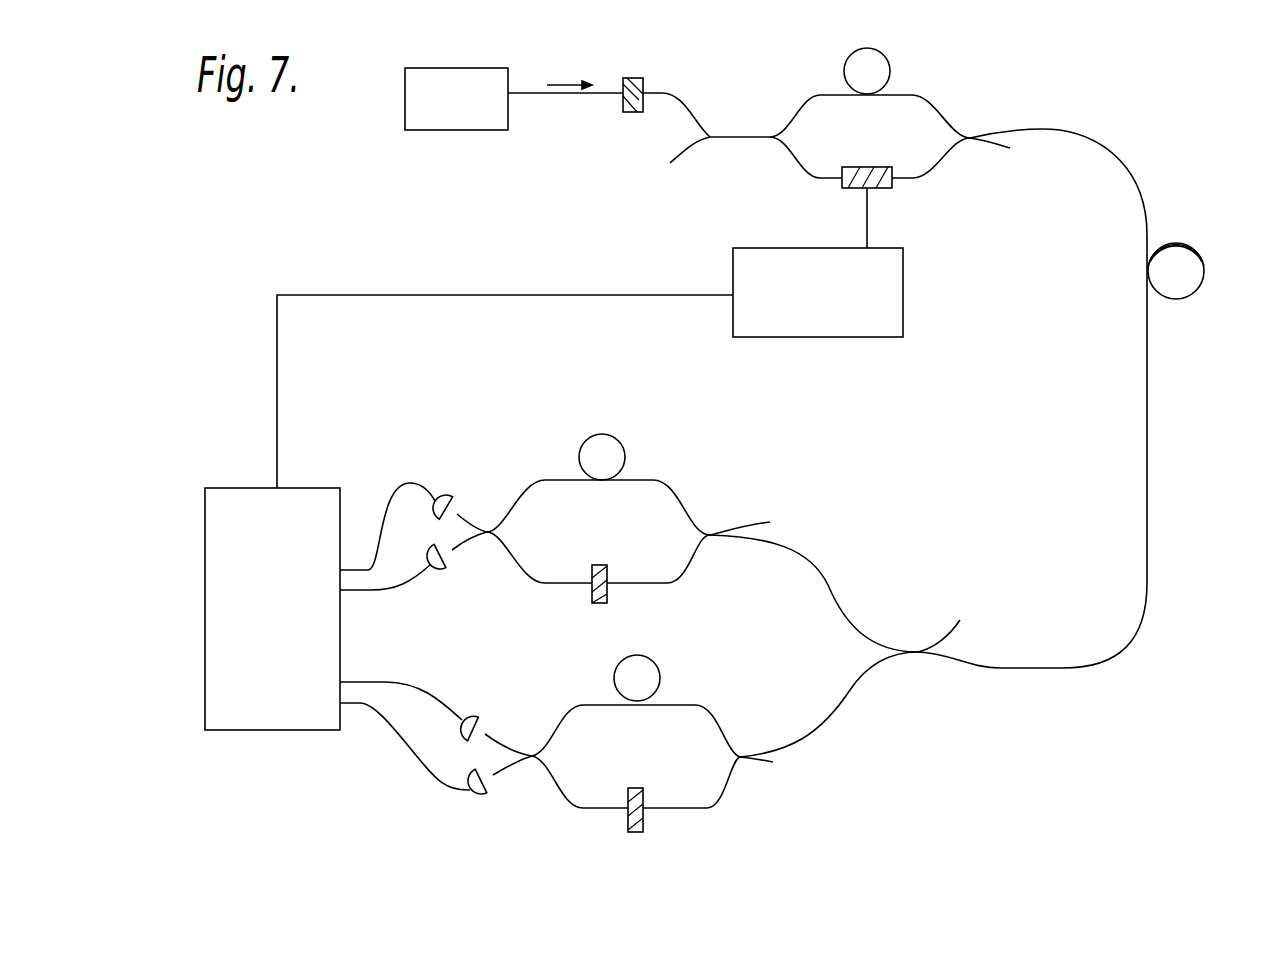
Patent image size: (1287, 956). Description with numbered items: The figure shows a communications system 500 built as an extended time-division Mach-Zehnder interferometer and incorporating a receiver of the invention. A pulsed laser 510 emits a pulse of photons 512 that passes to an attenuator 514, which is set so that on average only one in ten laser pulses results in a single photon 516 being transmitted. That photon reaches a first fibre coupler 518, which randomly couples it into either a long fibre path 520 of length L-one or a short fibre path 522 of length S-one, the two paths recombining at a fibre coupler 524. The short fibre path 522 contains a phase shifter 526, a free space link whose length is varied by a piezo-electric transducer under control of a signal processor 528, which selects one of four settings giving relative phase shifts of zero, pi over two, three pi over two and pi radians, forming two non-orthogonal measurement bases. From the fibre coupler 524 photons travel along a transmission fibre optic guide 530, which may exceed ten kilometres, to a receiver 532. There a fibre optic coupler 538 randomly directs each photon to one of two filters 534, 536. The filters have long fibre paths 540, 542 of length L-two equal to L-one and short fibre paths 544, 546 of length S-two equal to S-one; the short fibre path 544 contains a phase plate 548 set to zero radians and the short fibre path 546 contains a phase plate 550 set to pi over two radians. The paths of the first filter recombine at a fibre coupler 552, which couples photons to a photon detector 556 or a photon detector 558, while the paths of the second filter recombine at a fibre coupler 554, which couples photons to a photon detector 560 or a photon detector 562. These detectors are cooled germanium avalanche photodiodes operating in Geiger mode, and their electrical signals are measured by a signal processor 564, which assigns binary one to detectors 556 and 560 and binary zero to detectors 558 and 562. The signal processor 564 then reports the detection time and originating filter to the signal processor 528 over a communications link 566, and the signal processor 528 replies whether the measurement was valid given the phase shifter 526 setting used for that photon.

The communications system 500 is at (1120, 123).
The pulsed laser 510 is at (493, 145).
The pulse of photons 512 is at (558, 85).
The attenuator 514 is at (633, 112).
The single photon 516 is at (706, 128).
The first fibre coupler 518 is at (748, 137).
The long fibre path 520 is at (807, 94).
The short fibre path 522 is at (808, 178).
The fibre coupler 524 is at (972, 136).
The phase shifter 526 is at (884, 188).
The signal processor 528 is at (903, 296).
The transmission fibre optic guide 530 is at (1200, 288).
The receiver 532 is at (833, 552).
The filter 534 is at (728, 811).
The filter 536 is at (697, 492).
The fibre optic coupler 538 is at (918, 652).
The long fibre path 540 is at (700, 705).
The long fibre path 542 is at (652, 480).
The short fibre path 544 is at (607, 808).
The short fibre path 546 is at (677, 567).
The phase plate 548 is at (643, 832).
The phase plate 550 is at (607, 590).
The fibre coupler 552 is at (532, 756).
The fibre coupler 554 is at (487, 532).
The photon detector 556 is at (484, 796).
The photon detector 558 is at (480, 715).
The photon detector 560 is at (442, 570).
The photon detector 562 is at (460, 502).
The signal processor 564 is at (313, 730).
The communications link 566 is at (398, 296).